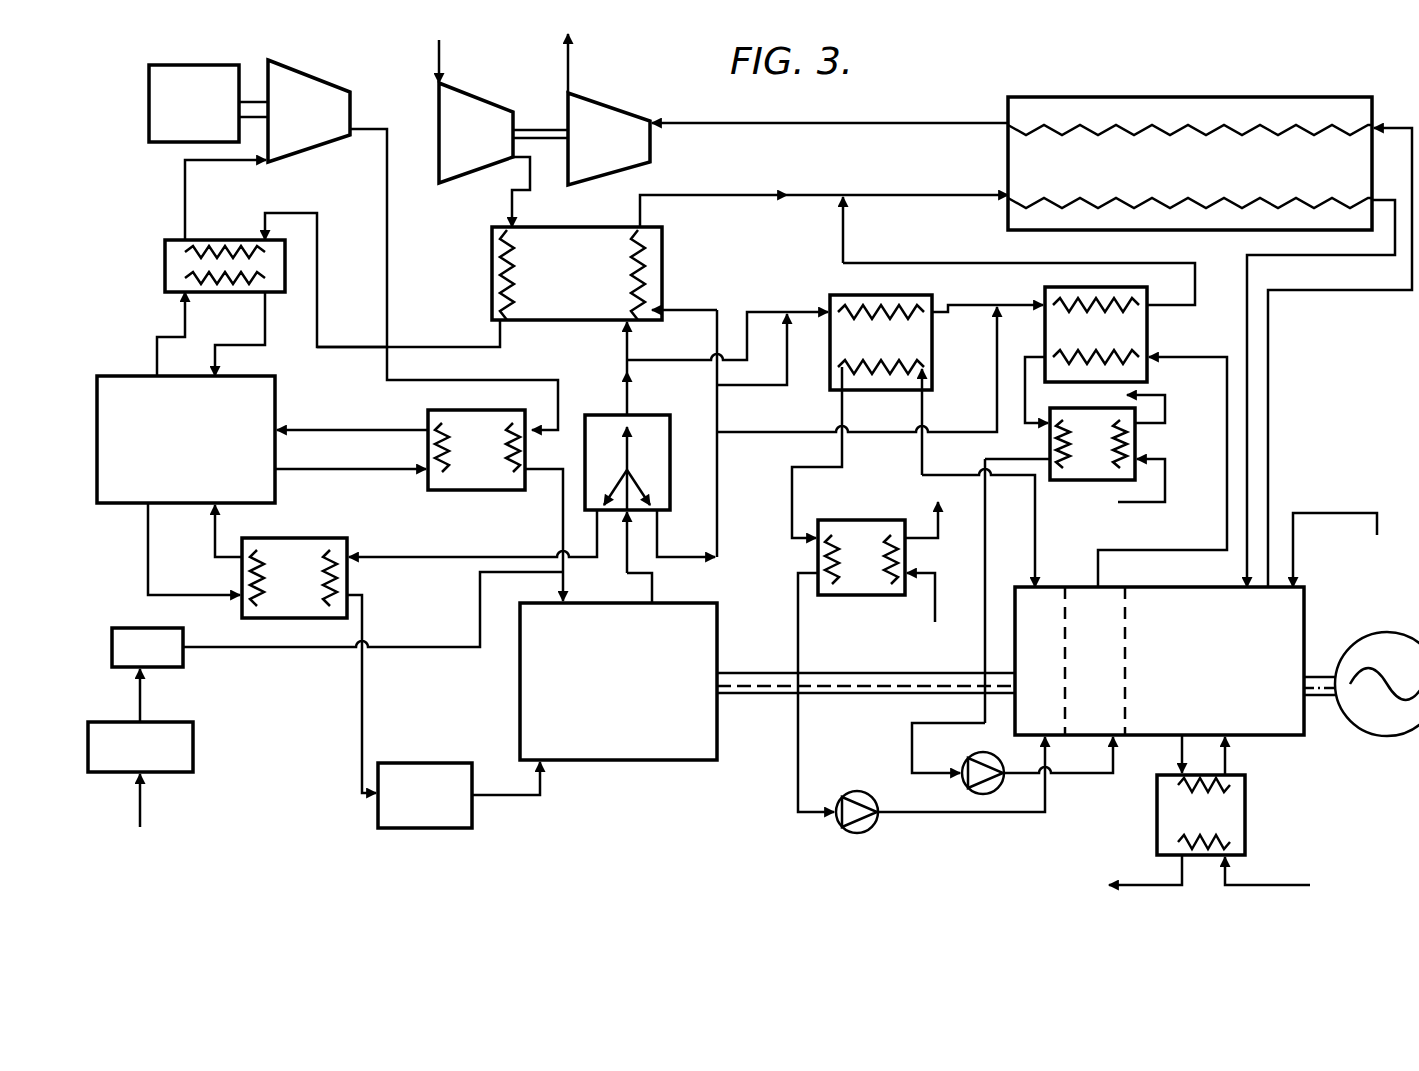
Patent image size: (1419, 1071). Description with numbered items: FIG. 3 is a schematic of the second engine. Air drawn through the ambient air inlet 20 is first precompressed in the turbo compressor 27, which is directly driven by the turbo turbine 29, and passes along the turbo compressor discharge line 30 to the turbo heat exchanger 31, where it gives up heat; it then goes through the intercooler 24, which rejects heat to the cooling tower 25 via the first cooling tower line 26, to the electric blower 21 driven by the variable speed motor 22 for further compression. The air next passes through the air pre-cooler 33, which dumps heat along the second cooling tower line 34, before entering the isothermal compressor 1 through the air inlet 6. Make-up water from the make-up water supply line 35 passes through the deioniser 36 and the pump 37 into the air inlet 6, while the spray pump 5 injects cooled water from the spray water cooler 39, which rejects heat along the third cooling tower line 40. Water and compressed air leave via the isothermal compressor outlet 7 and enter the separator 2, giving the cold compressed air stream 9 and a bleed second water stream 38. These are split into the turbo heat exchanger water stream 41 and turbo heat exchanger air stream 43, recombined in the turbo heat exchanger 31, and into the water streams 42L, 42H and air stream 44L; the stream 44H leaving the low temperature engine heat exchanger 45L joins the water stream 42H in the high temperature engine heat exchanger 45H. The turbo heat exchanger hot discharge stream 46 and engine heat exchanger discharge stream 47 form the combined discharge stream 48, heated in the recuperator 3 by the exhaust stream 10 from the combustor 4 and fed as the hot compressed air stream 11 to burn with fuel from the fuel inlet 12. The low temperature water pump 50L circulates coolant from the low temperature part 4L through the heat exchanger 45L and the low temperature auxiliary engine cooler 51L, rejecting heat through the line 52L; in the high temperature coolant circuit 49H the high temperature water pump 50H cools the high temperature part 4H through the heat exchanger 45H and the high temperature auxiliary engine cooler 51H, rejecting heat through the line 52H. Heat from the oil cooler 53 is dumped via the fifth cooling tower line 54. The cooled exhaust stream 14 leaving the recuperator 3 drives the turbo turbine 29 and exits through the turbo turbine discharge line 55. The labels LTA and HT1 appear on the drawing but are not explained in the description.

The isothermal compressor 1 is at (767, 681).
The separator 2 is at (627, 462).
The recuperator 3 is at (1190, 163).
The combustor 4 is at (1217, 661).
The low temperature part 4L is at (1036, 668).
The high temperature part 4H is at (1094, 668).
The spray pump 5 is at (459, 795).
The air inlet 6 is at (563, 514).
The isothermal compressor outlet 7 is at (652, 583).
The cold compressed air stream 9 is at (627, 383).
The exhaust stream 10 is at (1268, 352).
The hot compressed air stream 11 is at (1247, 340).
The fuel inlet 12 is at (1350, 513).
The cooled exhaust stream 14 is at (865, 123).
The ambient air inlet 20 is at (439, 57).
The electric blower 21 is at (413, 245).
The variable speed motor 22 is at (208, 103).
The intercooler 24 is at (168, 240).
The cooling tower 25 is at (186, 439).
The first cooling tower line 26 is at (178, 316).
The turbo compressor 27 is at (503, 133).
The turbo turbine 29 is at (609, 139).
The turbo compressor discharge line 30 is at (512, 205).
The turbo heat exchanger 31 is at (491, 280).
The air pre-cooler 33 is at (476, 450).
The second cooling tower line 34 is at (348, 430).
The make-up water supply line 35 is at (146, 808).
The deioniser 36 is at (140, 720).
The pump 37 is at (147, 647).
The second water stream 38 is at (692, 557).
The spray water cooler 39 is at (406, 649).
The third cooling tower line 40 is at (148, 553).
The turbo heat exchanger water stream 41 is at (717, 380).
The low temperature engine heat exchanger water stream 42L is at (755, 385).
The high temperature engine heat exchanger water stream 42H is at (968, 432).
The turbo heat exchanger air stream 43 is at (625, 356).
The low temperature engine heat exchanger air stream 44L is at (690, 360).
The stream leaving low temperature engine heat exchanger 44H is at (983, 305).
The low temperature engine heat exchanger 45L is at (881, 342).
The high temperature engine heat exchanger 45H is at (1095, 355).
The turbo heat exchanger hot discharge stream 46 is at (735, 195).
The engine heat exchanger discharge stream 47 is at (962, 263).
The combined discharge stream 48 is at (925, 195).
The high temperature coolant circuit 49H is at (1227, 520).
The low temperature water pump 50L is at (853, 834).
The high temperature water pump 50H is at (968, 765).
The low temperature auxiliary engine cooler 51L is at (878, 548).
The high temperature auxiliary engine cooler 51H is at (1028, 478).
The low temperature cooling tower line 52L is at (935, 612).
The high temperature cooling tower line 52H is at (1118, 502).
The oil cooler 53 is at (1177, 810).
The fifth cooling tower line 54 is at (1290, 866).
The turbo turbine discharge line 55 is at (568, 72).
The low temperature section LTA is at (792, 480).
The high temperature line HT1 is at (985, 658).